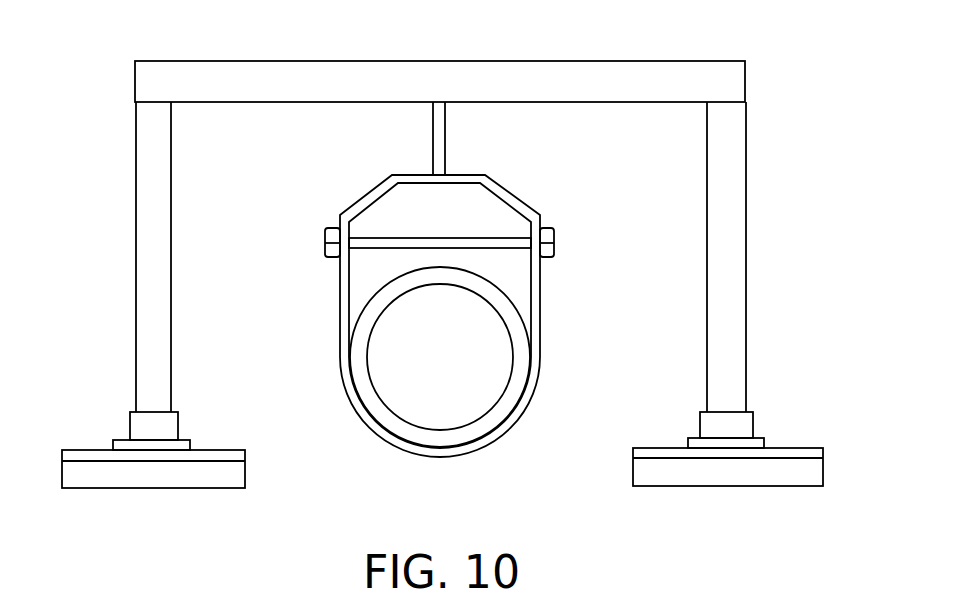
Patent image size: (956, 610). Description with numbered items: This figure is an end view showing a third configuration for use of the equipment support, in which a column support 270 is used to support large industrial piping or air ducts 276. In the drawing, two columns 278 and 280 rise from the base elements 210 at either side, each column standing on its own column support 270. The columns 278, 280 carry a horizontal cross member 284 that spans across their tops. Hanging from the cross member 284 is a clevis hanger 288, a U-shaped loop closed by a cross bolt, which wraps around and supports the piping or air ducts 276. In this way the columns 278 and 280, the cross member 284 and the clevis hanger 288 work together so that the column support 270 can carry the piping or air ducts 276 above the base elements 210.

The base plate / mounting plate 210 is at (58, 480).
The column support 270 is at (190, 418).
The piping or air ducts 276 is at (520, 372).
The column 278 is at (148, 278).
The column 280 is at (726, 220).
The cross member 284 is at (492, 72).
The clevis hanger 288 is at (522, 185).